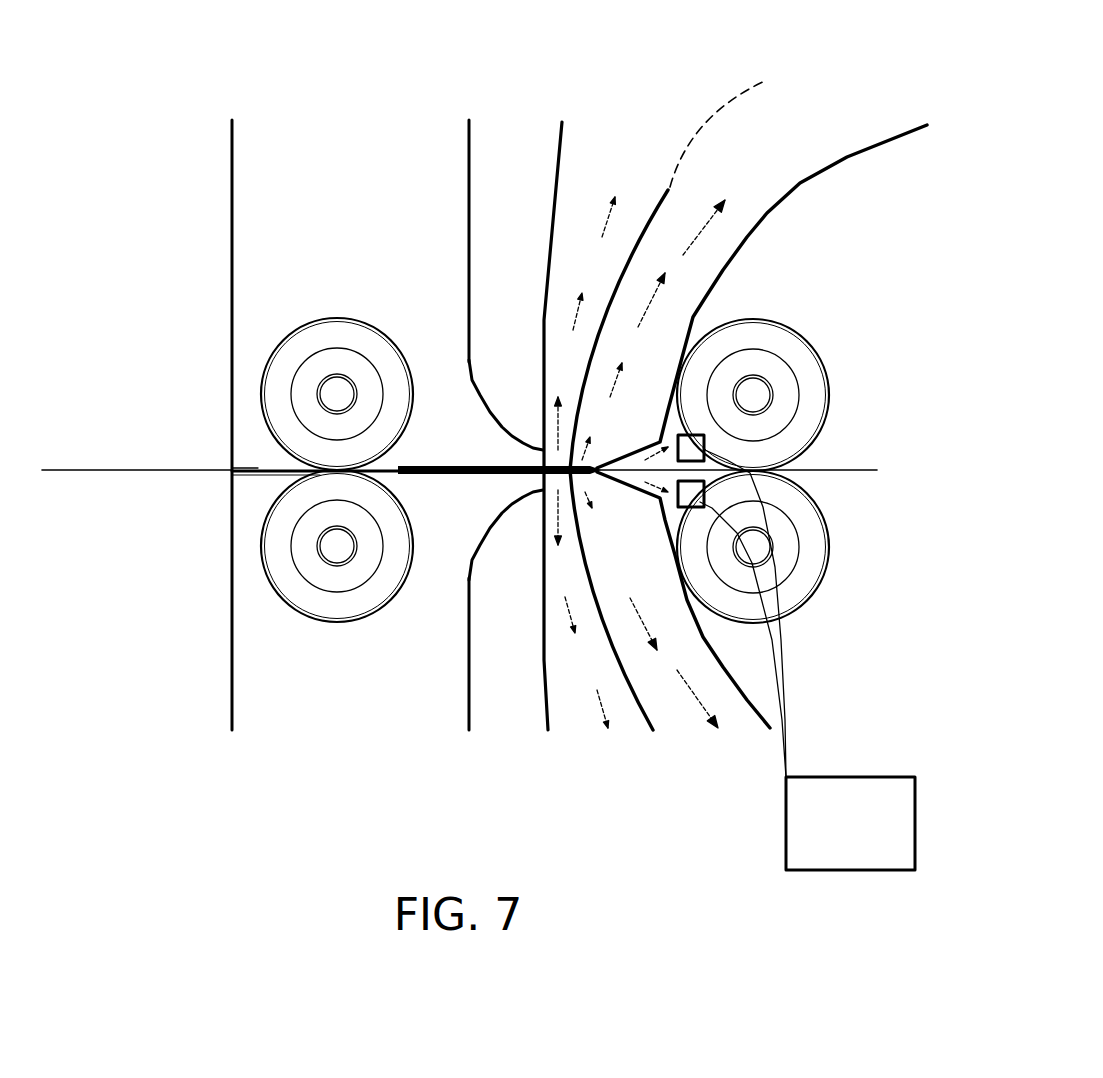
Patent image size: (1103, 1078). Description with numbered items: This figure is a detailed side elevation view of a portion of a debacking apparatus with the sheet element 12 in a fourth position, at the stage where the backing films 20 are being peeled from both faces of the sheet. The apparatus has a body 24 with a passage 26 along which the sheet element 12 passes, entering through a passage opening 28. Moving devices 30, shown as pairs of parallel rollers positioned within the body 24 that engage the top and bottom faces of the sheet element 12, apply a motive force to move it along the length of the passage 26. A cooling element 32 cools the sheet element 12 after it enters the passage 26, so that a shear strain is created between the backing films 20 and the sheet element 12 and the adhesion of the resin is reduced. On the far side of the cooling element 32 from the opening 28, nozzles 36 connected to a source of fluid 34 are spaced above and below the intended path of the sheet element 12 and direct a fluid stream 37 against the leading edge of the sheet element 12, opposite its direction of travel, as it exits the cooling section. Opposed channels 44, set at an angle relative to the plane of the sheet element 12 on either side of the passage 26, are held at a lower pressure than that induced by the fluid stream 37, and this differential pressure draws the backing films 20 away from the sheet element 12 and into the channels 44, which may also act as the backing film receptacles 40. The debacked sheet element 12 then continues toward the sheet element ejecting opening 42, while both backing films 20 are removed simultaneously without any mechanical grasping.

The sheet element 12 is at (87, 470).
The backing film 20 is at (658, 197).
The body 24 is at (332, 198).
The passage 26 is at (445, 473).
The passage opening 28 is at (233, 467).
The moving devices 30 is at (335, 392).
The cooling element 32 is at (463, 457).
The source of fluid 34 is at (840, 845).
The nozzles 36 is at (676, 434).
The fluid stream 37 is at (653, 470).
The backing film receptacles 40 is at (623, 273).
The sheet element ejecting opening 42 is at (601, 465).
The opposed channels 44 is at (690, 153).